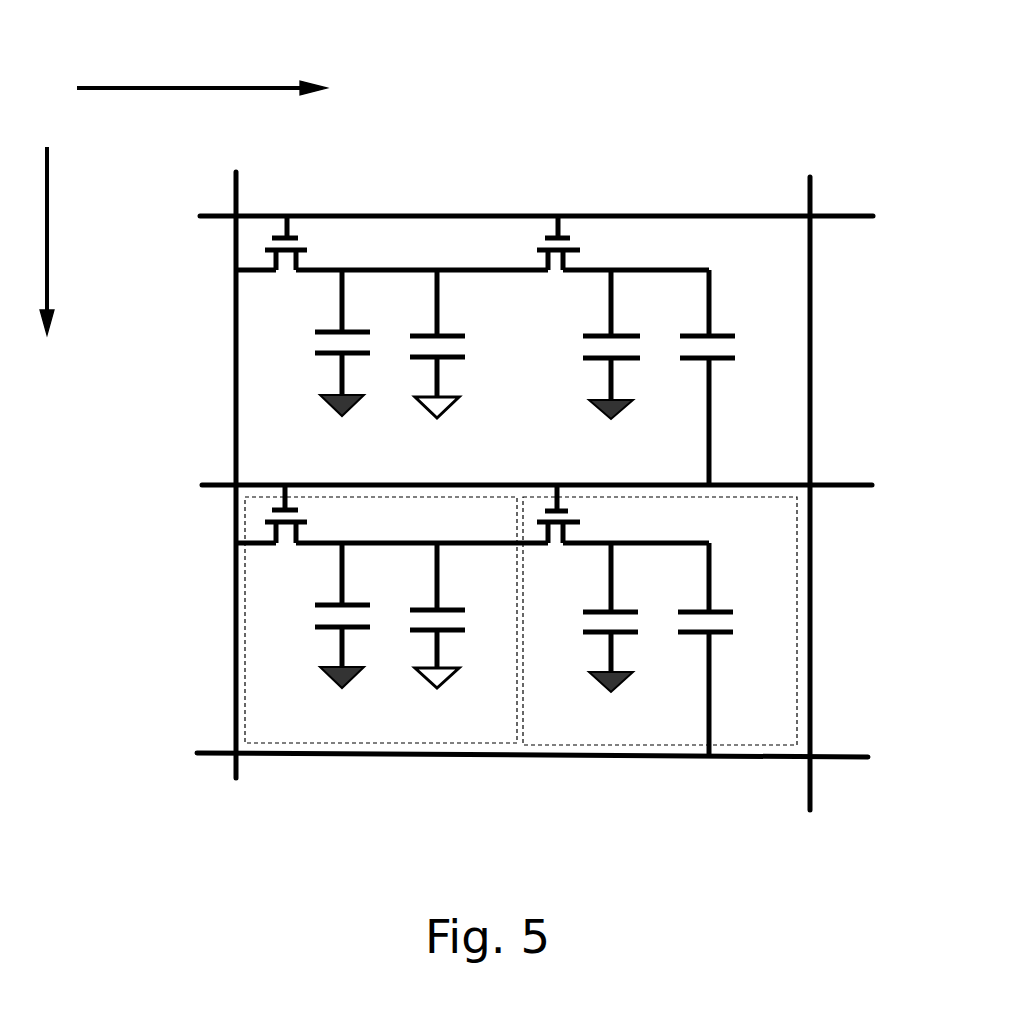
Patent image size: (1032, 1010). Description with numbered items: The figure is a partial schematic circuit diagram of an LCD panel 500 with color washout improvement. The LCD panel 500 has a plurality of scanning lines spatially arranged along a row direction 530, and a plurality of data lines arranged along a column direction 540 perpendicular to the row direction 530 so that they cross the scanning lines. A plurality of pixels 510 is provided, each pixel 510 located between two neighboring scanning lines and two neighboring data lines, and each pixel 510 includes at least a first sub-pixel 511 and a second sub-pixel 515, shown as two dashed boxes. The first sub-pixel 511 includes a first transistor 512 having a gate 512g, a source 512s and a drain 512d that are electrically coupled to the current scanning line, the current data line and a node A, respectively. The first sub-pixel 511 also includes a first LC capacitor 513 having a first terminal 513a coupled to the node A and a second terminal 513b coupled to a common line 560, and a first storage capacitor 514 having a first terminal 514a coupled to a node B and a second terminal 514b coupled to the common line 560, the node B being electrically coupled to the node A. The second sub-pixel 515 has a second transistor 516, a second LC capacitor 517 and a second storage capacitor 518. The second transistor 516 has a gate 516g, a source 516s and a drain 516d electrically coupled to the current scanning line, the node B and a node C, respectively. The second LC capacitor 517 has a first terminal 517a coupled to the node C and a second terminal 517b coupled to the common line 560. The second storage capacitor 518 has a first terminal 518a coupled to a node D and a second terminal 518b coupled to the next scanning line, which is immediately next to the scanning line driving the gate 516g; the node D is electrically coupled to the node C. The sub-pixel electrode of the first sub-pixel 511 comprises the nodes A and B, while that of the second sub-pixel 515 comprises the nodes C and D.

The LCD panel 500 is at (558, 62).
The pixel 510 is at (848, 601).
The first sub-pixel 511 is at (257, 725).
The transistor T1 512 is at (263, 522).
The gate 512g is at (288, 500).
The source 512s is at (260, 546).
The drain 512d is at (308, 548).
The LC capacitor Clc1 513 is at (316, 618).
The first terminal 513a is at (345, 583).
The second terminal 513b is at (343, 643).
The storage capacitor Cst1 514 is at (465, 618).
The first terminal 514a is at (440, 562).
The second terminal 514b is at (443, 660).
The second sub-pixel 515 is at (772, 689).
The transistor T2 516 is at (537, 512).
The source 516s is at (535, 540).
The gate 516g is at (562, 499).
The drain 516d is at (581, 548).
The LC capacitor Clc2 517 is at (590, 625).
The first terminal 517a is at (613, 587).
The second terminal 517b is at (611, 648).
The storage capacitor Cst2 518 is at (733, 620).
The first terminal 518a is at (711, 563).
The second terminal 518b is at (709, 693).
The row direction 530 is at (48, 257).
The column direction 540 is at (230, 90).
The common line 560 is at (330, 687).